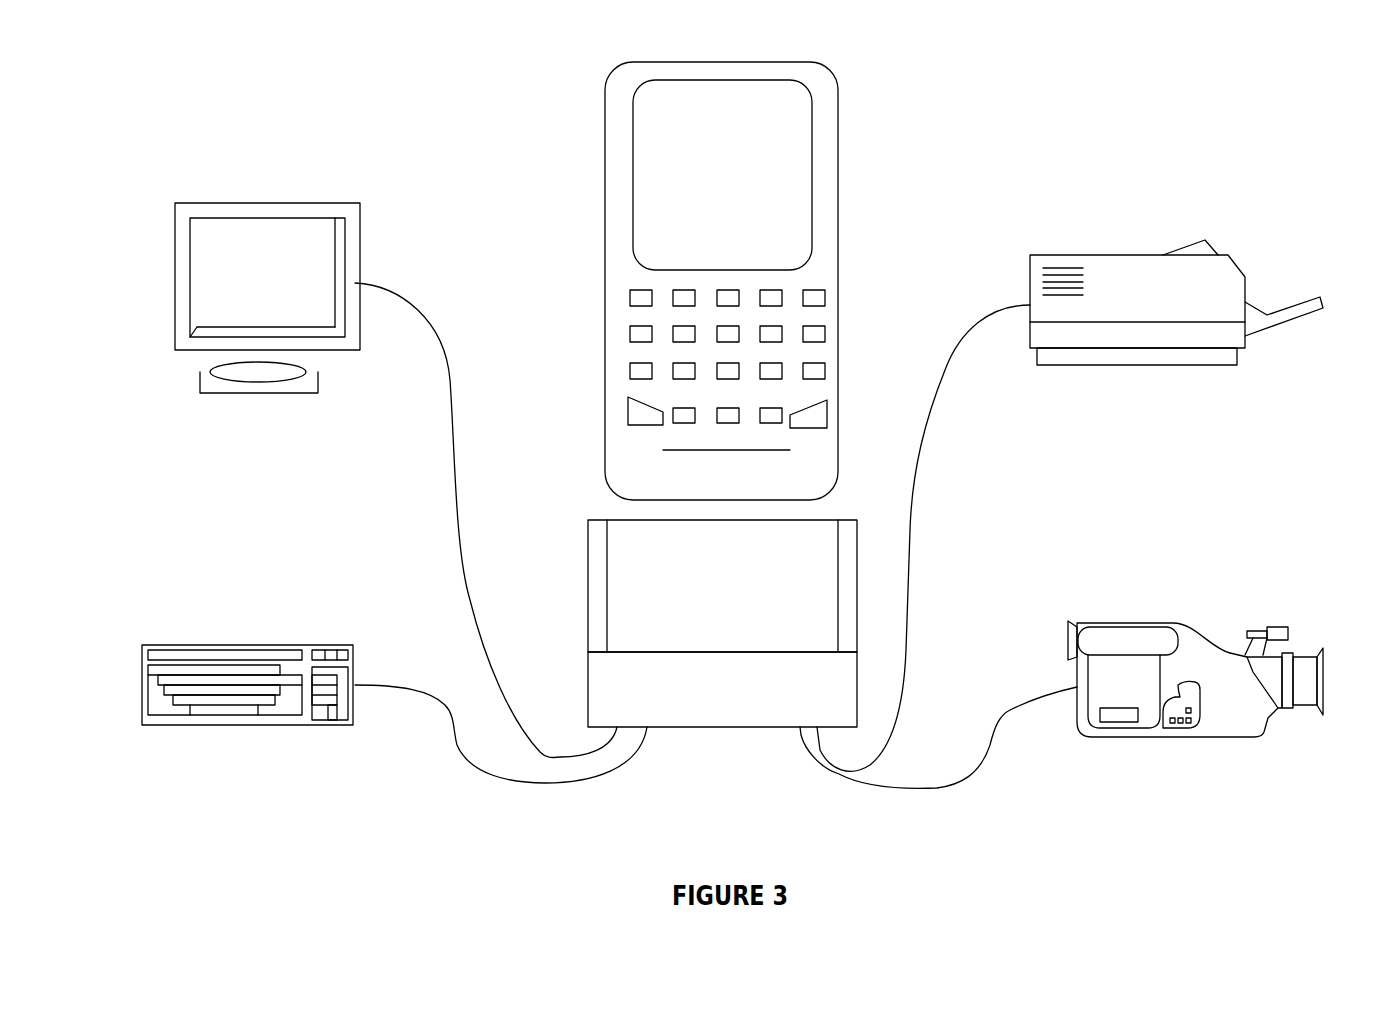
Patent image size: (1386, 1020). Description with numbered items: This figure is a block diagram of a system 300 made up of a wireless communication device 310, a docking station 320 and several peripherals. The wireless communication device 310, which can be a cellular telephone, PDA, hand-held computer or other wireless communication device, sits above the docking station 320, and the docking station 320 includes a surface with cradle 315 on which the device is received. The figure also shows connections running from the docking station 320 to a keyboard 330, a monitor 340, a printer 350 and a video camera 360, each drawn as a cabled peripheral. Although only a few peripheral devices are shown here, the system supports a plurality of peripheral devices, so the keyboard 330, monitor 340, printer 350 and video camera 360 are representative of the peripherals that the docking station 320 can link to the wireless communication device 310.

The system 300 is at (922, 77).
The wireless communication device 310 is at (743, 228).
The surface with cradle 315 is at (700, 645).
The docking station 320 is at (669, 687).
The keyboard 330 is at (163, 625).
The monitor 340 is at (218, 185).
The printer 350 is at (1045, 237).
The video camera 360 is at (1090, 587).